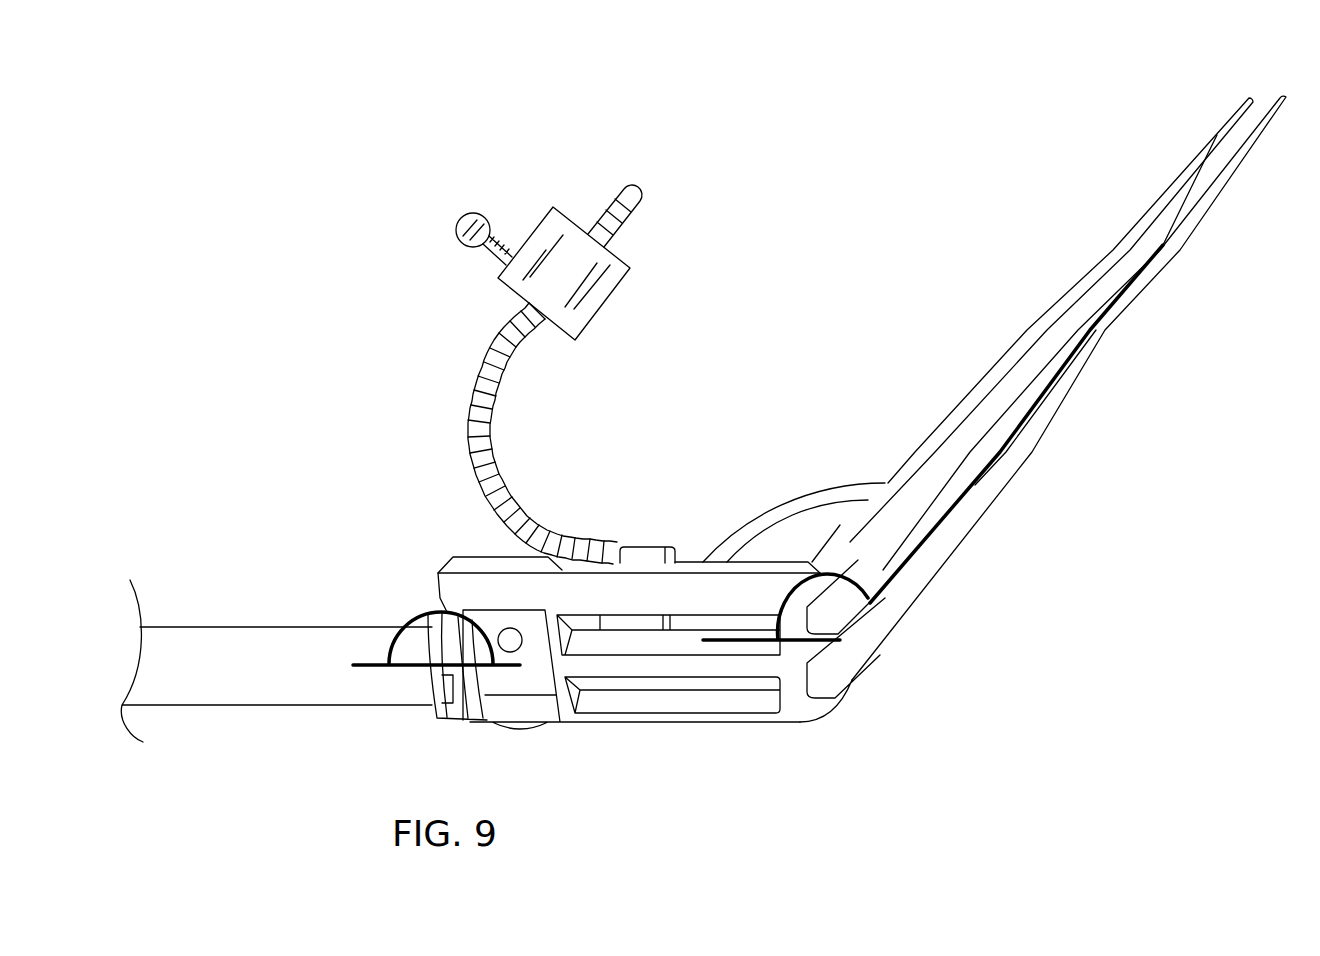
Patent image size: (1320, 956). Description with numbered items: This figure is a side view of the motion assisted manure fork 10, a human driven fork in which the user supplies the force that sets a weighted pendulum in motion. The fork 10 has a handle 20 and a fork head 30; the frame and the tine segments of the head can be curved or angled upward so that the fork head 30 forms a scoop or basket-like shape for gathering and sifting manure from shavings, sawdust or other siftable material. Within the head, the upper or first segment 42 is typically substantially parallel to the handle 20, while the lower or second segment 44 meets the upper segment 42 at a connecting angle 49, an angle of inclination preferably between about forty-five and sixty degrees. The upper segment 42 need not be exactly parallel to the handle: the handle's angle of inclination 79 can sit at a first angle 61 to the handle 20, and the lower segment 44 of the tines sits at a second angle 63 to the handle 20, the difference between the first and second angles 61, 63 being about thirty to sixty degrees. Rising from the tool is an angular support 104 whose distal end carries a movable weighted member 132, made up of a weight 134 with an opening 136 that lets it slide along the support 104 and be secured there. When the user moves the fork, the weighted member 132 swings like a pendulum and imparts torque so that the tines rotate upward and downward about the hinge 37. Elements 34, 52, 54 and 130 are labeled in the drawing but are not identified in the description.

The motion assisted manure fork 10 is at (322, 138).
The handle 20 is at (221, 690).
The fork head 30 is at (978, 606).
The blade pivot base 34 is at (801, 692).
The hinge 37 is at (893, 646).
The upper or first segment 42 is at (607, 747).
The lower or second segment 44 is at (1078, 452).
The connecting angle 49 is at (847, 576).
The housing slots 52 is at (683, 737).
The second retractor blade 54 is at (1046, 510).
The first angle 61 is at (402, 603).
The second angle 63 is at (798, 586).
The handle's angle of inclination 79 is at (410, 577).
The angular support 104 is at (498, 456).
The mounting assembly 130 is at (662, 200).
The movable weighted member 132 is at (614, 320).
The weight 134 is at (546, 326).
The opening 136 is at (478, 213).